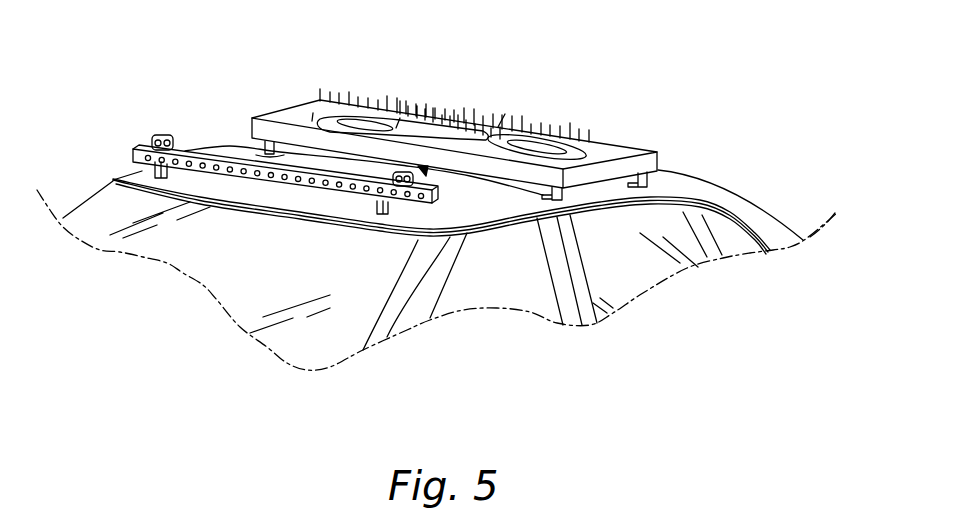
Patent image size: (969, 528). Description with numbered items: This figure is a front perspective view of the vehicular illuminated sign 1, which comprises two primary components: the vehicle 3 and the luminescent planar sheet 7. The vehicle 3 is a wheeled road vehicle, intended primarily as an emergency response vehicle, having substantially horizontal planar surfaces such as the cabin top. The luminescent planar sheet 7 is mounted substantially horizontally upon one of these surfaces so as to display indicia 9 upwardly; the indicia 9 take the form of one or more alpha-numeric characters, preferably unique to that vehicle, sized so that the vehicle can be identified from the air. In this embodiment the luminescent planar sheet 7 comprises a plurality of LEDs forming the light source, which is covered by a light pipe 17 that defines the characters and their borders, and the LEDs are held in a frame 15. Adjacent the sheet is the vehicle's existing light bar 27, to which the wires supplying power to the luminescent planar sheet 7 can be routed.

The vehicular illuminated sign 1 is at (427, 131).
The vehicle 3 is at (760, 212).
The luminescent planar sheet 7 is at (436, 124).
The indicia 9 is at (453, 116).
The frame 15 is at (257, 130).
The light pipe 17 is at (297, 115).
The light bar 27 is at (202, 154).